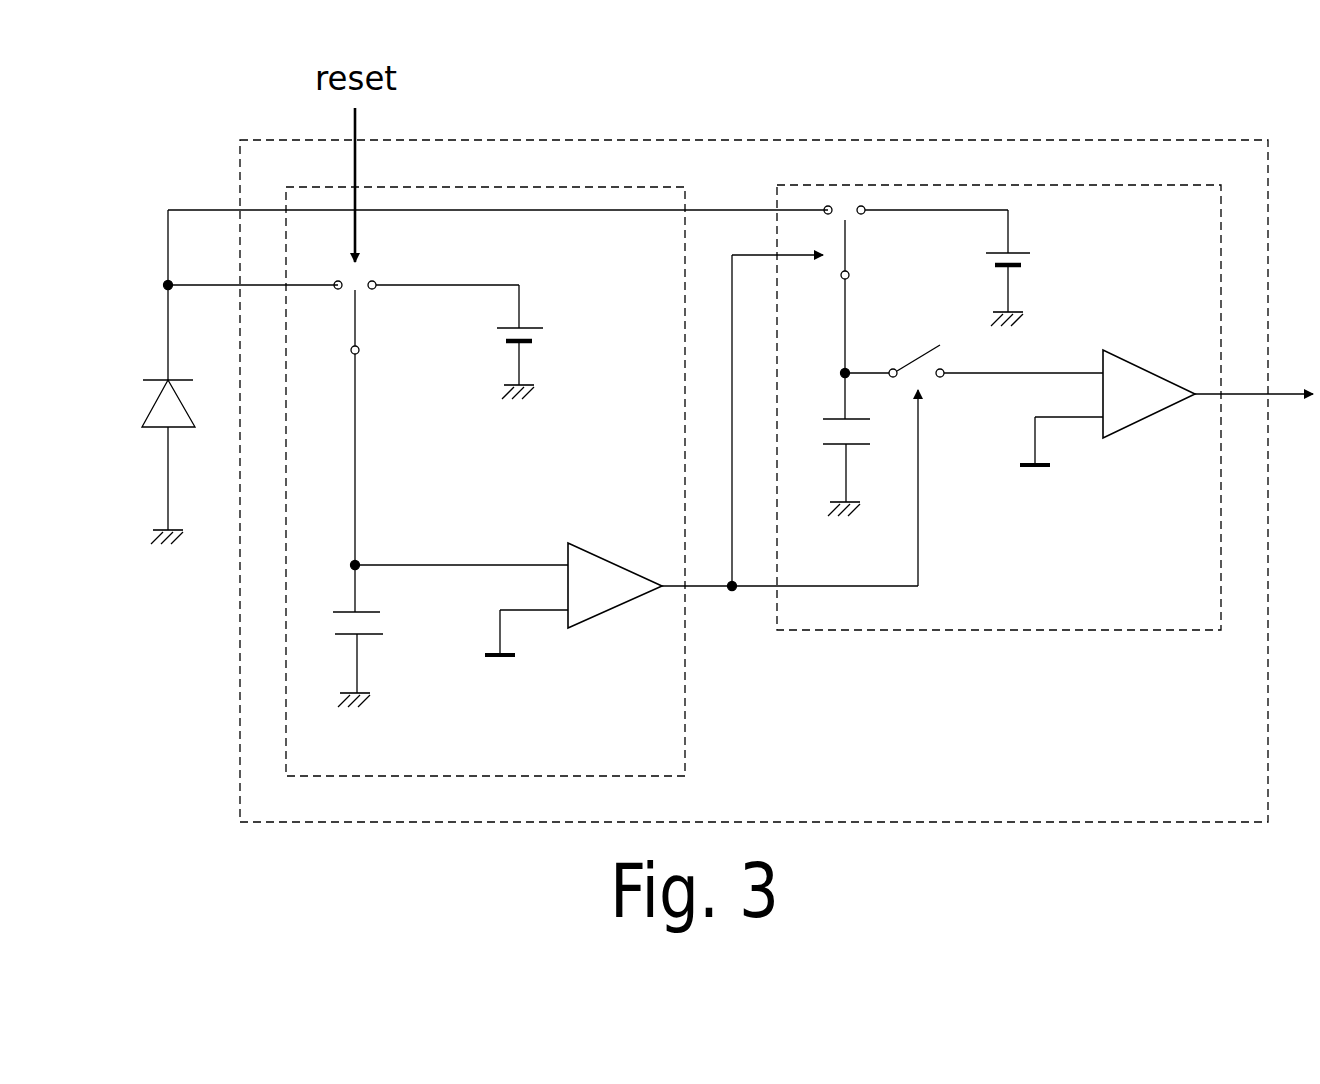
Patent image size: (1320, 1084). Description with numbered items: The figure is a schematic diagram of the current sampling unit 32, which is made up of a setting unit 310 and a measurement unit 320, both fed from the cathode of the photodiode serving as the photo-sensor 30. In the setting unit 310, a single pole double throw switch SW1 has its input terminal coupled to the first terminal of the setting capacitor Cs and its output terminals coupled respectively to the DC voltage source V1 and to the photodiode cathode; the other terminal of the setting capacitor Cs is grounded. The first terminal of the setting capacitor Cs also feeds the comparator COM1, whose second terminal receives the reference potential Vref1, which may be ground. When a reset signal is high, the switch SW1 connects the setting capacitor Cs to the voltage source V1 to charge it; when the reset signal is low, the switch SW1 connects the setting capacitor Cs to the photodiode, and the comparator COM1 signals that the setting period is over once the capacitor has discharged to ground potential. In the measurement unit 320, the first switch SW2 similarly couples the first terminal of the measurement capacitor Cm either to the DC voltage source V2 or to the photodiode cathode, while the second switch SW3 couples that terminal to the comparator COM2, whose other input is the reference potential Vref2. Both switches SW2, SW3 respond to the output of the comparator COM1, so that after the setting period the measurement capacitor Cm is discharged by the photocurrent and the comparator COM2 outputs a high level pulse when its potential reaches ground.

The photo-sensor 30 is at (140, 407).
The current sampling unit 32 is at (1127, 138).
The setting unit 310 is at (603, 187).
The measurement unit 320 is at (1127, 185).
The switch SW1 is at (363, 272).
The first switch SW2 is at (862, 230).
The second switch SW3 is at (913, 360).
The DC voltage source V1 is at (540, 333).
The DC voltage source V2 is at (1032, 260).
The setting capacitor Cs is at (380, 623).
The measurement capacitor Cm is at (823, 433).
The comparator COM1 is at (628, 540).
The comparator COM2 is at (1163, 350).
The reference potential Vref1 is at (514, 654).
The reference potential Vref2 is at (1053, 461).